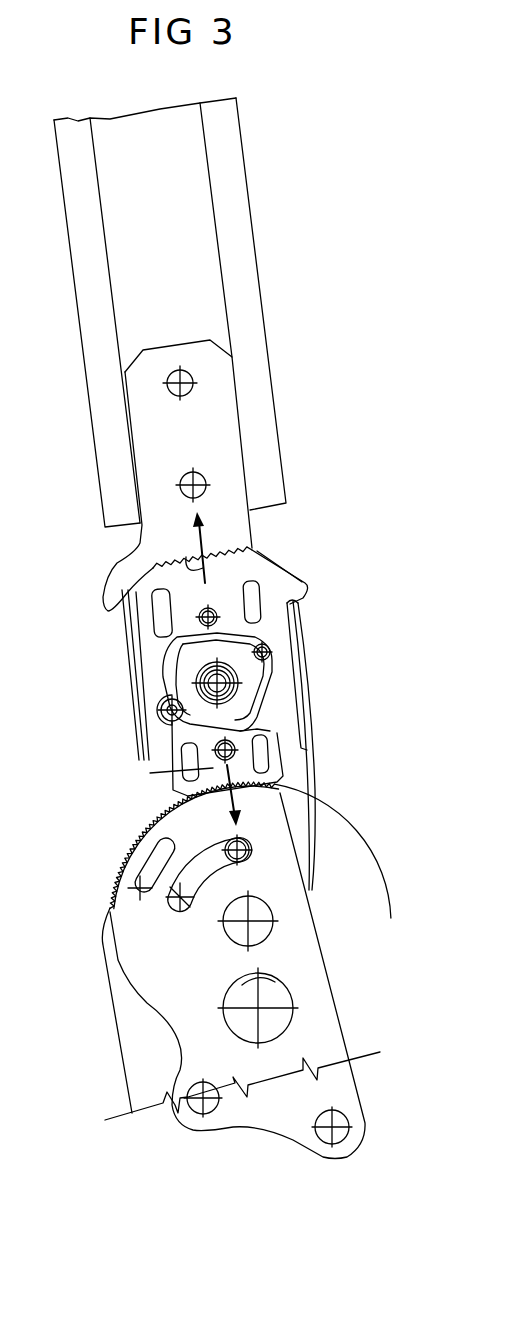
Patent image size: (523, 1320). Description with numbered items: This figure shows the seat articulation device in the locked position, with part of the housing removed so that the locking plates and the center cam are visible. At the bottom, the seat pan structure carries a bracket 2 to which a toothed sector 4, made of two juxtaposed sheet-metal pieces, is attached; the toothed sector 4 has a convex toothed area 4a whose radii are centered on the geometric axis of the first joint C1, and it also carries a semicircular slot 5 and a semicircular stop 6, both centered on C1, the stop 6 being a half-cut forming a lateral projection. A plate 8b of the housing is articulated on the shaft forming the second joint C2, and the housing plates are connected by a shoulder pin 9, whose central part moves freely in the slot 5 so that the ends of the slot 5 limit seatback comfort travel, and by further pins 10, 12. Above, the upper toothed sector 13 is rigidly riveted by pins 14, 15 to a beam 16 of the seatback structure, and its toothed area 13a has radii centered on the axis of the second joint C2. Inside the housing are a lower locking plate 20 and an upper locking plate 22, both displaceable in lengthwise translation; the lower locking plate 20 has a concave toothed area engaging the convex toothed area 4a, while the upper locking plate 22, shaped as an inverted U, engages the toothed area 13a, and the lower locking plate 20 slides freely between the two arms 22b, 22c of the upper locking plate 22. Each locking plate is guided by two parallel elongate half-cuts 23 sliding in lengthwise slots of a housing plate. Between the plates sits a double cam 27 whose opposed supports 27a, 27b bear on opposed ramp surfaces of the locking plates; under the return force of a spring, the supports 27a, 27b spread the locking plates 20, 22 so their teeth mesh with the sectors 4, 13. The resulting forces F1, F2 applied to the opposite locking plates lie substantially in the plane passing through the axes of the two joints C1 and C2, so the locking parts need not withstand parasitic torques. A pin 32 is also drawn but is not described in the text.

The bracket 2 is at (132, 1053).
The toothed sector 4 is at (158, 1002).
The convex toothed area 4a is at (138, 842).
The semicircular slot 5 is at (172, 896).
The semicircular stop 6 is at (147, 873).
The plate of housing 8b is at (302, 748).
The shoulder pin 9 is at (250, 856).
The pin 10 is at (273, 650).
The pin 12 is at (162, 717).
The upper toothed sector 13 is at (217, 435).
The toothed area 13a is at (223, 549).
The pin 14 is at (193, 383).
The pin 15 is at (206, 482).
The beam 16 is at (240, 258).
The lower locking plate 20 is at (160, 791).
The upper locking plate 22 is at (223, 580).
The arm of upper locking plate 22b is at (278, 675).
The arm of upper locking plate 22c is at (150, 678).
The elongate half-cut 23 is at (160, 600).
The double cam 27 is at (240, 705).
The support of cam 27a is at (263, 733).
The support of cam 27b is at (218, 624).
The pin 32 is at (233, 757).
The first joint C1 is at (265, 925).
The second joint C2 is at (222, 688).
The resulting force F1 is at (227, 804).
The resulting force F2 is at (196, 536).